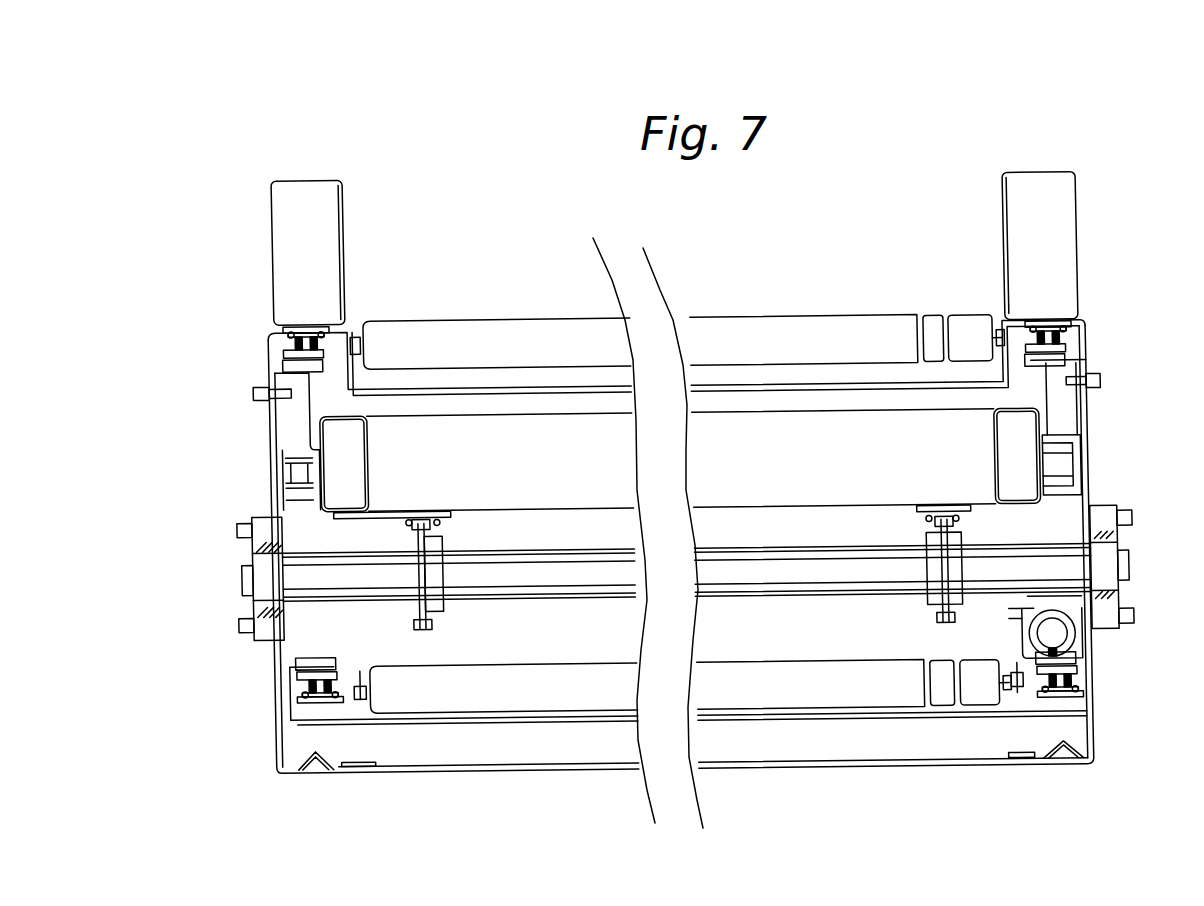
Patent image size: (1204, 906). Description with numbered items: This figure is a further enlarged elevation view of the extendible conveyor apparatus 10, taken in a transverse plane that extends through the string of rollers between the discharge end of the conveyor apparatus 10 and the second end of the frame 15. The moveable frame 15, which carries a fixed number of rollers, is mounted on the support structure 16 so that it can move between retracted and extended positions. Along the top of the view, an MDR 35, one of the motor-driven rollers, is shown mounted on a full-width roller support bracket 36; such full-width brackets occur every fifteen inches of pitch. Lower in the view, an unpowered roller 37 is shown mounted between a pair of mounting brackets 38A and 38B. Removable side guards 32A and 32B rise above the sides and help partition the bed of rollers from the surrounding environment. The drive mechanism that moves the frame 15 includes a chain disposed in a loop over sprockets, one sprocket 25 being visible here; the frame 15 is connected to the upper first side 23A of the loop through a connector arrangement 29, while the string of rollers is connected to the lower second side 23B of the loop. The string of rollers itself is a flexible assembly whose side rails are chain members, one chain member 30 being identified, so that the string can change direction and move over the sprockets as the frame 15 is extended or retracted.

The conveyor apparatus 10 is at (371, 133).
The frame 15 is at (583, 412).
The support structure 16 is at (527, 768).
The first side of the loop 23A is at (412, 528).
The second side of the loop 23B is at (410, 627).
The sprocket 25 is at (418, 580).
The connector arrangement 29 is at (350, 527).
The chain member 30 is at (291, 351).
The removable side guard 32A is at (276, 222).
The removable side guard 32B is at (1077, 208).
The MDR 35 is at (707, 326).
The full-width roller support bracket 36 is at (832, 383).
The unpowered roller 37 is at (865, 698).
The mounting bracket 38A is at (347, 707).
The mounting bracket 38B is at (1022, 692).